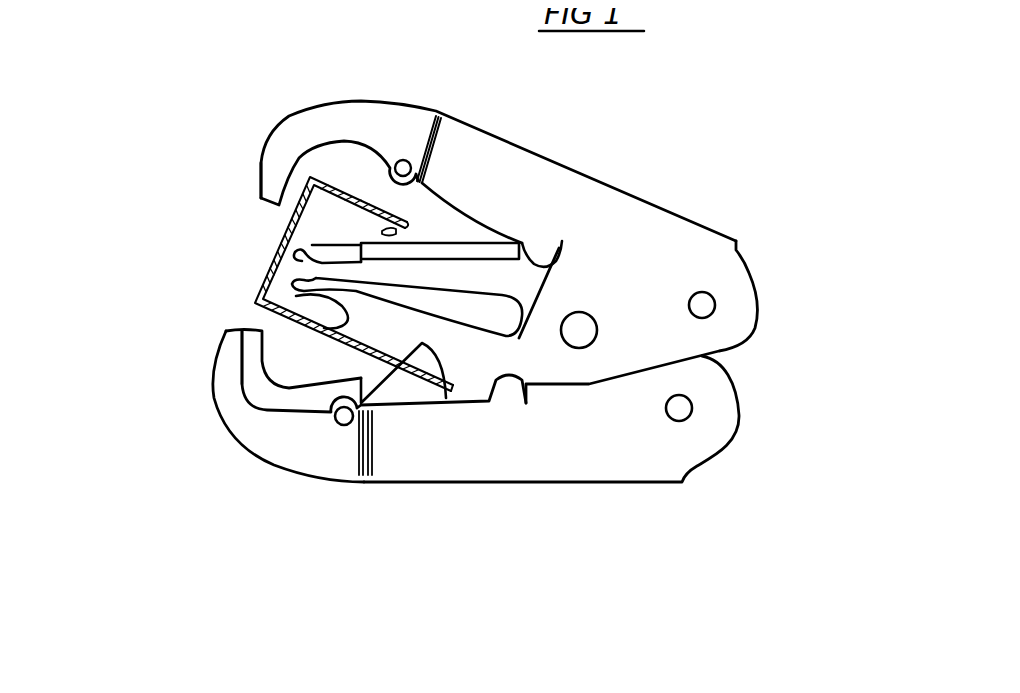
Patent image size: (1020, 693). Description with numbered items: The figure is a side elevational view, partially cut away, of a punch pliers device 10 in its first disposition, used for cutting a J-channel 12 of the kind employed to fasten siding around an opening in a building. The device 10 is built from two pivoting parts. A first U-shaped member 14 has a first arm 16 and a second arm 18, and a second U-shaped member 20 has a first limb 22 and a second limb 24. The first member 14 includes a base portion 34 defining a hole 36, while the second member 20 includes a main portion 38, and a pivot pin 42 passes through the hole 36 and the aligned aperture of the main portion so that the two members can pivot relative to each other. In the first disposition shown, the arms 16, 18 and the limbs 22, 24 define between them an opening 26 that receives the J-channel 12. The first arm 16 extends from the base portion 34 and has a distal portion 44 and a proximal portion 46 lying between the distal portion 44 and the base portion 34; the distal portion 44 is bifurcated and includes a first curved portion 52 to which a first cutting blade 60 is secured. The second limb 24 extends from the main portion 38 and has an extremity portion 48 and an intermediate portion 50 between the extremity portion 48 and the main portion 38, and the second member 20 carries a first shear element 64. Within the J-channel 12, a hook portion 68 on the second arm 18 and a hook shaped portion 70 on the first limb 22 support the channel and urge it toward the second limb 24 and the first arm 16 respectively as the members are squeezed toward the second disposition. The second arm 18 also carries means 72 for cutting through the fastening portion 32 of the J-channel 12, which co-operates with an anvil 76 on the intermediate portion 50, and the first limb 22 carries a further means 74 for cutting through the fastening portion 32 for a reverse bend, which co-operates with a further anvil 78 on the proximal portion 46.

The punch pliers device 10 is at (198, 181).
The J-channel 12 is at (257, 293).
The first U-shaped member 14 is at (591, 174).
The first arm 16 is at (480, 152).
The second arm 18 is at (447, 400).
The second U-shaped member 20 is at (568, 489).
The first limb 22 is at (546, 192).
The second limb 24 is at (501, 462).
The opening 26 is at (447, 238).
The fastening portion 32 is at (352, 345).
The base portion 34 is at (667, 263).
The hole 36 is at (598, 337).
The main portion 38 is at (653, 467).
The pivot pin 42 is at (583, 330).
The distal portion 44 is at (320, 112).
The proximal portion 46 is at (553, 222).
The extremity portion 48 is at (233, 425).
The intermediate portion 50 is at (397, 467).
The first curved portion 52 is at (277, 153).
The first cutting blade 60 is at (325, 165).
The first shear element 64 is at (253, 372).
The hook portion 68 is at (303, 300).
The hook shaped portion 70 is at (307, 258).
The means for cutting 72 is at (350, 320).
The further means for cutting 74 is at (503, 252).
The anvil 76 is at (424, 407).
The further anvil 78 is at (457, 262).